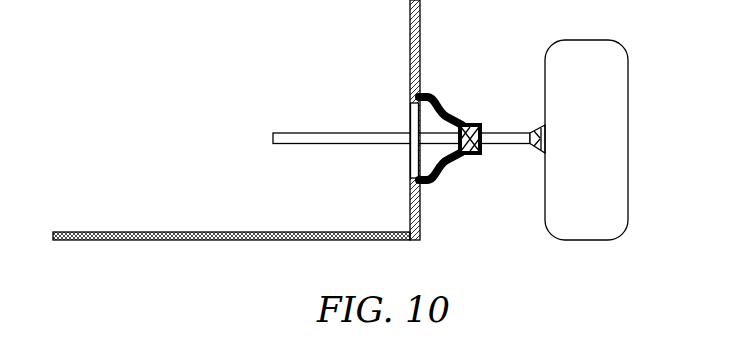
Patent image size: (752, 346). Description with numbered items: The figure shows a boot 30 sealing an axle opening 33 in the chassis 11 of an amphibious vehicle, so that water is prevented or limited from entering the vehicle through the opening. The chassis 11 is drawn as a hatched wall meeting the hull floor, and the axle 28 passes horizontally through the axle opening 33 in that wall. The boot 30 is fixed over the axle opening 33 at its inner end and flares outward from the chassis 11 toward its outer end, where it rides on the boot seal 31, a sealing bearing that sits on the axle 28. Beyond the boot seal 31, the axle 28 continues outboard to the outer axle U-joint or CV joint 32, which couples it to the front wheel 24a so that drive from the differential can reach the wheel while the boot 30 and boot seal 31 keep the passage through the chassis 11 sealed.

The chassis 11 is at (410, 62).
The axle 28 is at (370, 144).
The axle opening 33 is at (409, 120).
The boot 30 is at (443, 106).
The boot seal 31 is at (483, 122).
The outer axle U-joint or CV joint 32 is at (530, 150).
The front wheel 24a is at (614, 139).